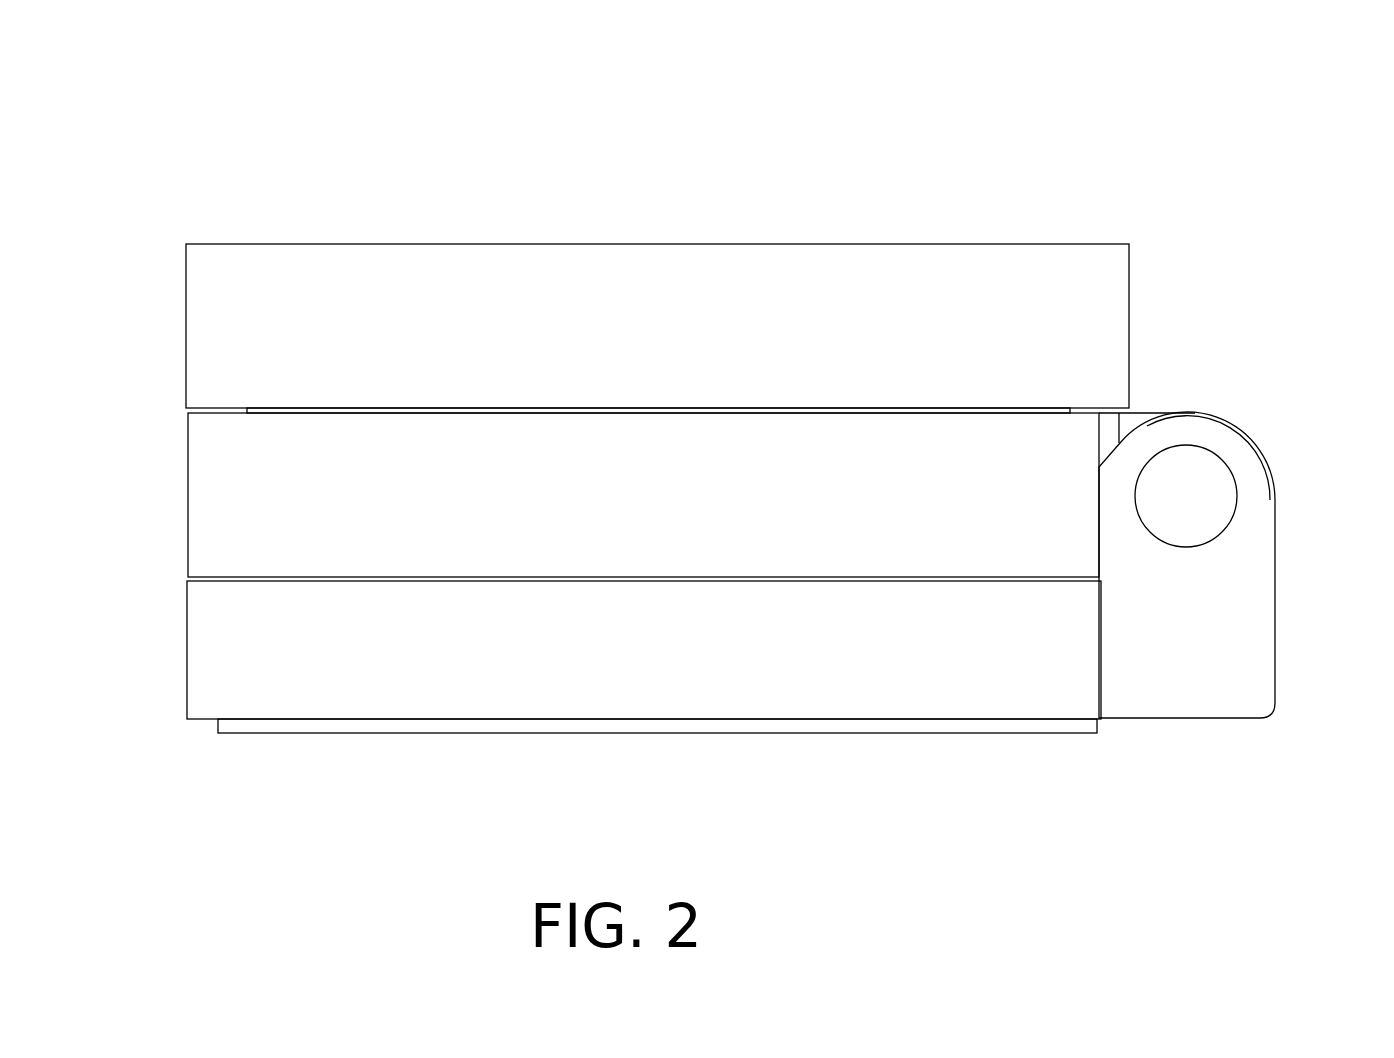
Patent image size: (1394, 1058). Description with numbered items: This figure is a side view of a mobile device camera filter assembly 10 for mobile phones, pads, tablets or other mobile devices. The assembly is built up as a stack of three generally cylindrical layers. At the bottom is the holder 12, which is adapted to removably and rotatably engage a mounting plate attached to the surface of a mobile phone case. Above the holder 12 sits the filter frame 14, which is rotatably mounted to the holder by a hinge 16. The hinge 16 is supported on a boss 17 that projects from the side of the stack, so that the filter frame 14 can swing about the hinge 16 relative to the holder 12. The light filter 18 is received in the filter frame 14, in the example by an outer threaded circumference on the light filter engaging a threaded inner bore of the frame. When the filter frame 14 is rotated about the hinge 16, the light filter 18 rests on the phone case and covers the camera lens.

The mobile device camera filter assembly 10 is at (995, 145).
The holder 12 is at (275, 638).
The filter frame 14 is at (293, 486).
The hinge 16 is at (1198, 482).
The boss 17 is at (1195, 622).
The light filter 18 is at (225, 309).